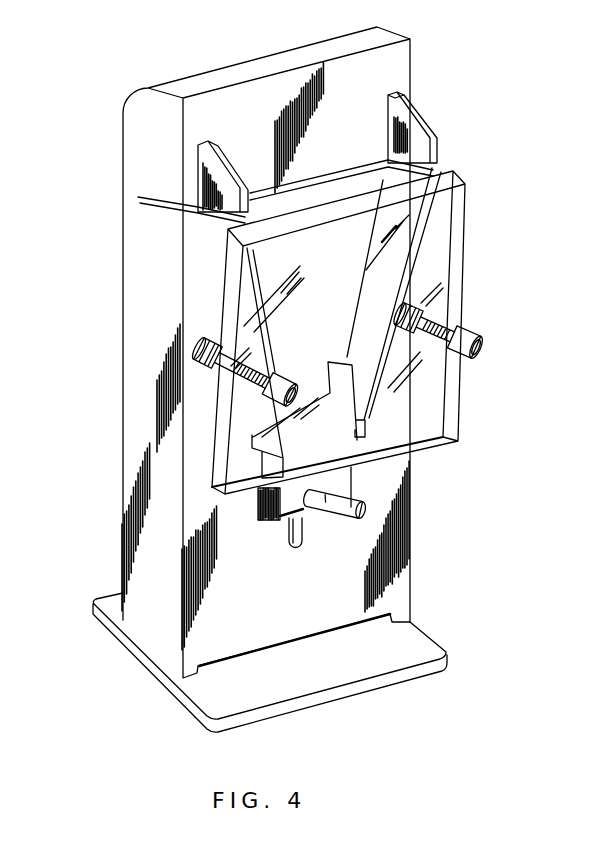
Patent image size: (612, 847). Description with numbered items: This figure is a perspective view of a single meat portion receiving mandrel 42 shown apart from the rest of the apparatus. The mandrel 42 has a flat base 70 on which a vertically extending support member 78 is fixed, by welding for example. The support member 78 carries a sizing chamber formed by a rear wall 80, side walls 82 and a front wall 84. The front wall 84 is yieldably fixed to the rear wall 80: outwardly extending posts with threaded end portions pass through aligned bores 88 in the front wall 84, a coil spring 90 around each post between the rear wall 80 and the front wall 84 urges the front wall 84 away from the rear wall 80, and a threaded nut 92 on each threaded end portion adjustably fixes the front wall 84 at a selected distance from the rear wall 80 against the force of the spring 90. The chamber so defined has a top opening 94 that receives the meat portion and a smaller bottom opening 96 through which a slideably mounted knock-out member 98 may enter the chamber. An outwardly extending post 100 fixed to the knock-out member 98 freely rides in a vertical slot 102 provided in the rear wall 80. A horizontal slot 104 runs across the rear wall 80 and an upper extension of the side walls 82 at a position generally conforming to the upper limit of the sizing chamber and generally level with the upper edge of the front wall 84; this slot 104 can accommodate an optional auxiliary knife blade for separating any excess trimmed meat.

The mandrel 42 is at (292, 337).
The base 70 is at (160, 671).
The support member 78 is at (123, 488).
The rear wall 80 is at (368, 182).
The side walls 82 is at (213, 238).
The front wall 84 is at (463, 232).
The bores 88 is at (248, 370).
The coil spring 90 is at (198, 345).
The threaded nut 92 is at (270, 402).
The top opening 94 is at (265, 200).
The bottom opening 96 is at (380, 422).
The knock-out member 98 is at (262, 500).
The post 100 is at (368, 510).
The vertical slot 102 is at (303, 537).
The horizontal slot 104 is at (350, 162).